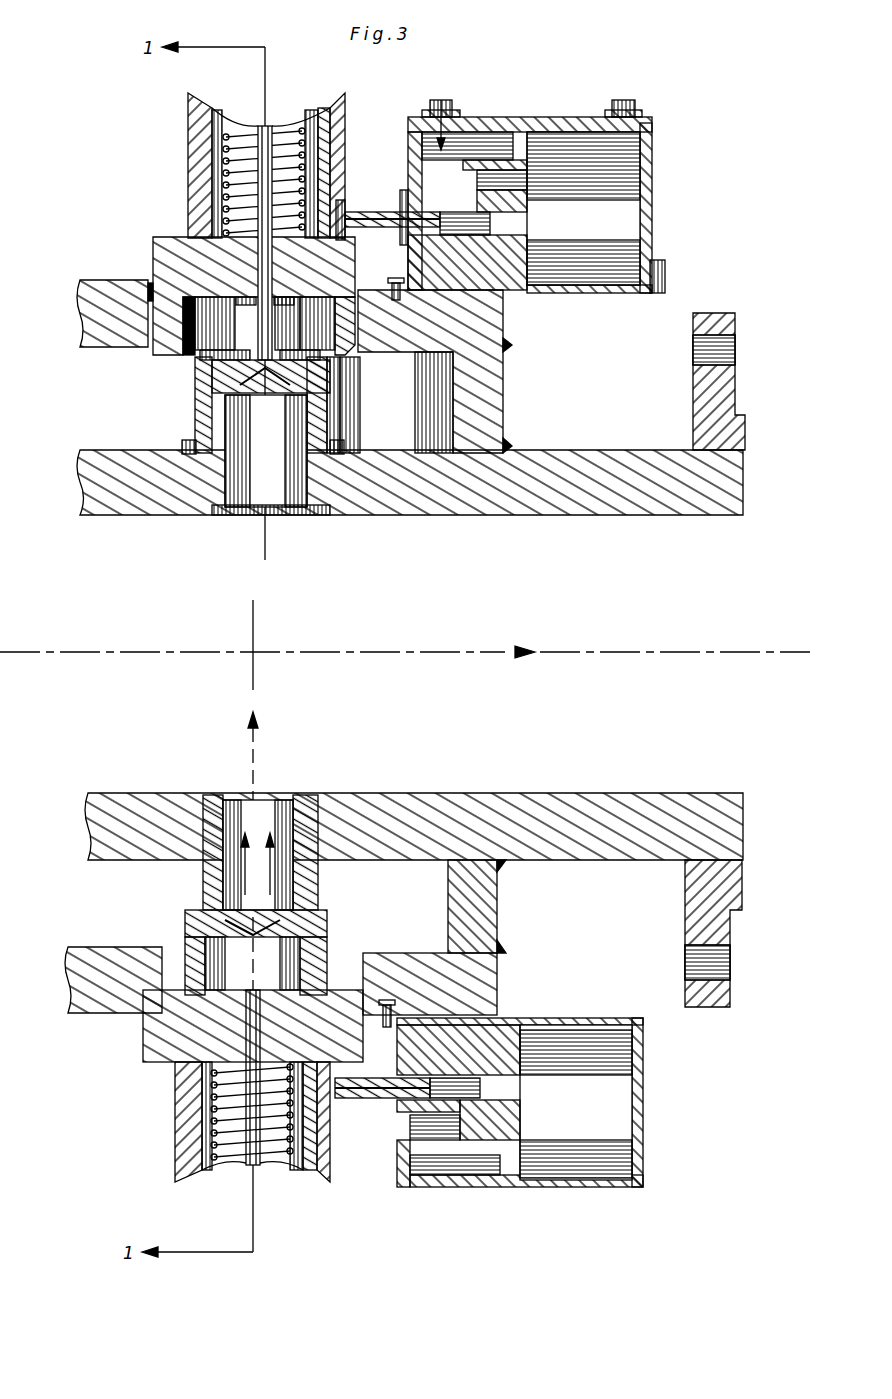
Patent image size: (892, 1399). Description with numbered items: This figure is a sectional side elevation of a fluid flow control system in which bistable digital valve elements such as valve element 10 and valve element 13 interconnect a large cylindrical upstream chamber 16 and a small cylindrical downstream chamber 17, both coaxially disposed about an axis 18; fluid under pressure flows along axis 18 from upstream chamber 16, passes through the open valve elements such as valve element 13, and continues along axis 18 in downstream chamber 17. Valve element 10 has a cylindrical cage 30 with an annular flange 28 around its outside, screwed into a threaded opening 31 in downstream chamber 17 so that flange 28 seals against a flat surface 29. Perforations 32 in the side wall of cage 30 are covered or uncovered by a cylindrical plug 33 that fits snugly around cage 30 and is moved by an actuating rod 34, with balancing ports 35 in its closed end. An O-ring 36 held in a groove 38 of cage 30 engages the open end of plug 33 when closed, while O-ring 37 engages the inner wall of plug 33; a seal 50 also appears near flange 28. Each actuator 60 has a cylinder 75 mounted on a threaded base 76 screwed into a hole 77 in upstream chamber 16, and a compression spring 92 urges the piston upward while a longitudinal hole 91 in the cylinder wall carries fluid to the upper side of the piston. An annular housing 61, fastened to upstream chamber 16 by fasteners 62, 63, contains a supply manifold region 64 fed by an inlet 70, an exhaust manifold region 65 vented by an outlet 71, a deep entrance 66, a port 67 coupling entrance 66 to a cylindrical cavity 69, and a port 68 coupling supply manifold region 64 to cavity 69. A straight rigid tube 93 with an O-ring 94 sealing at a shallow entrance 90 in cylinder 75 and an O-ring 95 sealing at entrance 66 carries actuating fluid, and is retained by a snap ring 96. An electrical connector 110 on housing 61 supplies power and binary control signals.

The valve element 10 is at (288, 439).
The valve element 13 is at (258, 904).
The upstream chamber 16 is at (98, 350).
The downstream chamber 17 is at (178, 514).
The axis 18 is at (618, 653).
The annular flange 28 is at (190, 445).
The flat surface 29 is at (345, 440).
The cage 30 is at (271, 451).
The threaded opening 31 is at (225, 512).
The perforations 32 is at (300, 430).
The plug 33 is at (342, 375).
The actuating rod 34 is at (278, 315).
The balancing ports 35 is at (250, 342).
The O-ring 36 is at (345, 416).
The O-ring 37 is at (342, 396).
The groove 38 is at (212, 388).
The seal 50 is at (190, 440).
The actuator 60 is at (378, 135).
The annular housing 61 is at (508, 120).
The fastener 62 is at (398, 278).
The fastener 63 is at (388, 1028).
The supply manifold region 64 is at (475, 138).
The exhaust manifold region 65 is at (652, 182).
The entrance 66 is at (498, 222).
The port 67 is at (502, 200).
The port 68 is at (502, 180).
The cylindrical cavity 69 is at (557, 185).
The inlet 70 is at (436, 100).
The outlet 71 is at (640, 112).
The cylinder 75 is at (190, 118).
The base 76 is at (160, 243).
The hole 77 is at (178, 354).
The entrance 90 is at (348, 214).
The longitudinal hole 91 is at (328, 170).
The compression spring 92 is at (222, 172).
The tube 93 is at (346, 205).
The O-ring 94 is at (290, 300).
The O-ring 95 is at (465, 220).
The snap ring 96 is at (404, 195).
The electrical connector 110 is at (667, 272).